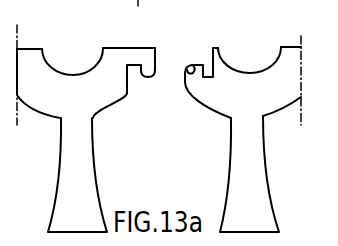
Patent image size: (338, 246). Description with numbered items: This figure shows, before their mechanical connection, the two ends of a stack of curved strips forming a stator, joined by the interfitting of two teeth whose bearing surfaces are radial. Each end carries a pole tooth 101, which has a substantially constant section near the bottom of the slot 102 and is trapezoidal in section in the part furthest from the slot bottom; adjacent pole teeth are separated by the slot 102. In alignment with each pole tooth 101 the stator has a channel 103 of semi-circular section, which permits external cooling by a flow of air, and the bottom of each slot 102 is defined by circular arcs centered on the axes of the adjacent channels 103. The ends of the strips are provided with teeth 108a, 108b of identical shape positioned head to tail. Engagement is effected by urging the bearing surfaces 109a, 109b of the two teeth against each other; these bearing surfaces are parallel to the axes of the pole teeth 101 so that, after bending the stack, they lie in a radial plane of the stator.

The pole tooth 101 is at (89, 198).
The slot 102 is at (50, 163).
The channel 103 is at (62, 57).
The tooth 108a is at (151, 73).
The tooth 108b is at (188, 66).
The bearing surface 109a is at (141, 75).
The bearing surface 109b is at (198, 84).